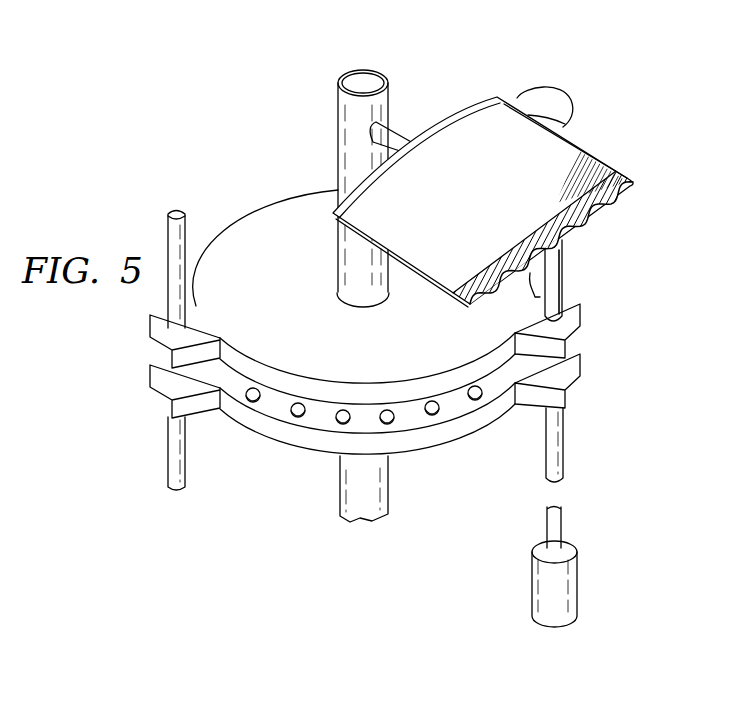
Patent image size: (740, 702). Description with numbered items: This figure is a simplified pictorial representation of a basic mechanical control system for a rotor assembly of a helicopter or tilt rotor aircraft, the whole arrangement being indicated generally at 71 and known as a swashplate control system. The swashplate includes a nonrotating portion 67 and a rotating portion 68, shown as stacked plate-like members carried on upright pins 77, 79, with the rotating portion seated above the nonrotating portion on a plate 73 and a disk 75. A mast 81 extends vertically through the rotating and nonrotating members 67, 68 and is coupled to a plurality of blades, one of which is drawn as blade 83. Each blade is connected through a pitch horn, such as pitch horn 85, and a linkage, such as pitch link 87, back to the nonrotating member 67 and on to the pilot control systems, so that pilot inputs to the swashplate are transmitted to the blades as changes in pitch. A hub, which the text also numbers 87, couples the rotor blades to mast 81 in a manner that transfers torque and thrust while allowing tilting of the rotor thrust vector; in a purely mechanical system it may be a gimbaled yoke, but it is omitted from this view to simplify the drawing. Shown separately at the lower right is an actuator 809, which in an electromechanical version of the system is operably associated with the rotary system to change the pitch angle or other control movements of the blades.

The rotor hub assembly 71 is at (249, 114).
The upper plate 73 is at (182, 383).
The disk 75 is at (282, 217).
The left pin 77 is at (173, 449).
The right pin 79 is at (558, 445).
The mast 81 is at (350, 117).
The blade 83 is at (467, 127).
The pitch horn 85 is at (543, 93).
The pitch link 87 is at (563, 265).
The nonrotating portion 67 is at (402, 445).
The rotating portion 68 is at (288, 388).
The actuator 809 is at (532, 590).